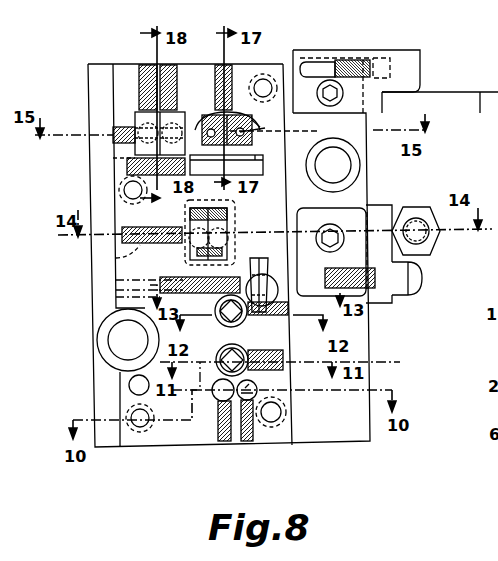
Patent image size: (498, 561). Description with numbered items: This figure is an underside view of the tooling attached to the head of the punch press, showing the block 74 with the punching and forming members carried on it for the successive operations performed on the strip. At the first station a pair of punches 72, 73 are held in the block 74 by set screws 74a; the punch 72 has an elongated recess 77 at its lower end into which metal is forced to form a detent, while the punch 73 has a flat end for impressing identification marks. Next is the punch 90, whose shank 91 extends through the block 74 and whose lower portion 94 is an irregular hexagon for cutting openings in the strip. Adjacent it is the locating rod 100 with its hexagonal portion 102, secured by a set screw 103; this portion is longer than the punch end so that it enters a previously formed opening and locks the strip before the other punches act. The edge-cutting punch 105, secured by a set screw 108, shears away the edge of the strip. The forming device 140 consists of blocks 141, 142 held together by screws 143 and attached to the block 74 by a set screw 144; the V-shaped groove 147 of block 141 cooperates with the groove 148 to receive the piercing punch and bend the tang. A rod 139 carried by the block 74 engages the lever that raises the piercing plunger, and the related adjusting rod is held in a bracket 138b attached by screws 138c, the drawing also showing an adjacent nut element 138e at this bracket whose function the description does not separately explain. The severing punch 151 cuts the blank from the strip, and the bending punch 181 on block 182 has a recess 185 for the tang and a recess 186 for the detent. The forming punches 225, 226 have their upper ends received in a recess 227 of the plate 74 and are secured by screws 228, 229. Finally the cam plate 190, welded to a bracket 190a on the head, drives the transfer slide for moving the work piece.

The block 74 is at (117, 80).
The screw 229 is at (150, 62).
The forming punch 225 is at (195, 113).
The recess 227 is at (140, 117).
The forming punch 226 is at (140, 118).
The screw 228 is at (117, 143).
The recess 186 is at (227, 122).
The block 182 is at (266, 116).
The punch 181 is at (264, 130).
The recess 185 is at (275, 138).
The punch 151 is at (237, 158).
The bracket 190a is at (356, 72).
The cam plate 190 is at (462, 92).
The screws 138c is at (343, 226).
The lock nut 138e is at (418, 215).
The rod 139 is at (410, 220).
The bracket 138b is at (436, 250).
The block 141 is at (210, 207).
The forming device 140 is at (262, 224).
The V-shaped groove 147 is at (225, 236).
The block 142 is at (192, 215).
The screws 143 is at (192, 252).
The groove 148 is at (150, 231).
The set screw 144 is at (116, 258).
The set screw 108 is at (92, 298).
The punch 105 is at (302, 266).
The rod 100 is at (215, 306).
The hexagonal portion 102 is at (220, 318).
The set screw 103 is at (288, 322).
The shank 91 is at (290, 347).
The punch 90 is at (224, 350).
The lower portion 94 is at (244, 354).
The punch 73 is at (220, 396).
The elongated recess 77 is at (255, 384).
The punch 72 is at (258, 391).
The set screws 74a is at (245, 444).